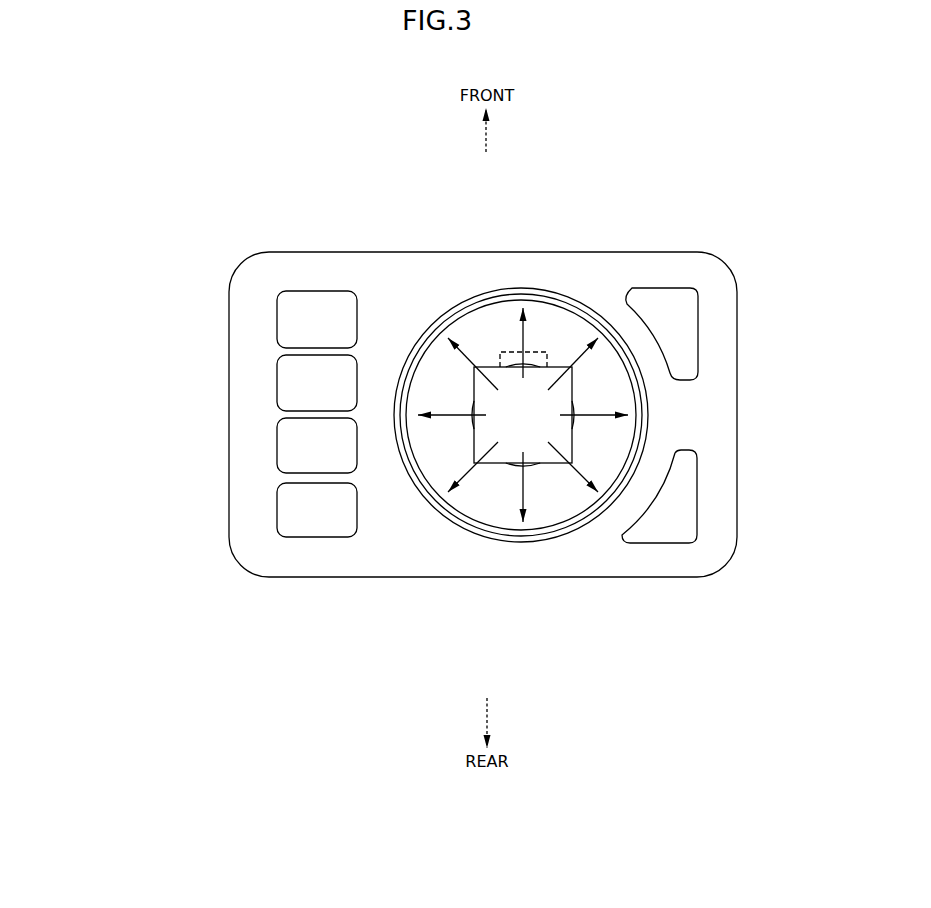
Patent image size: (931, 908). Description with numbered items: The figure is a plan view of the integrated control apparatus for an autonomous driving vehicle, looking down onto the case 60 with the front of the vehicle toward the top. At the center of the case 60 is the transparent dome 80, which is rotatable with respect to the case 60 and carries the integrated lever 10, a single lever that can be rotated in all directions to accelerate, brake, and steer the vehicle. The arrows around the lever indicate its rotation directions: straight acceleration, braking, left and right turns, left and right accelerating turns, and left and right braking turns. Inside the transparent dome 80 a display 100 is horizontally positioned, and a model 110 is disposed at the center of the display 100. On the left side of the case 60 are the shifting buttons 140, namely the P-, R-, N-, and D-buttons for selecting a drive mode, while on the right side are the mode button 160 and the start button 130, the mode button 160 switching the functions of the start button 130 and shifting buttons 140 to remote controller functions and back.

The integrated lever 10 is at (547, 397).
The case 60 is at (494, 266).
The transparent dome 80 is at (562, 537).
The display 100 is at (505, 495).
The model 110 is at (535, 352).
The start button 130 is at (688, 498).
The shifting buttons 140 is at (290, 322).
The mode button 160 is at (688, 337).